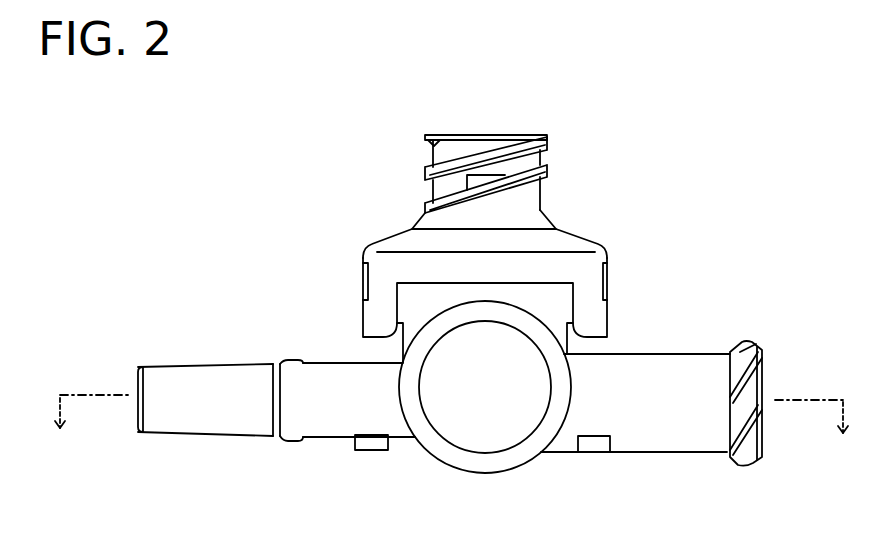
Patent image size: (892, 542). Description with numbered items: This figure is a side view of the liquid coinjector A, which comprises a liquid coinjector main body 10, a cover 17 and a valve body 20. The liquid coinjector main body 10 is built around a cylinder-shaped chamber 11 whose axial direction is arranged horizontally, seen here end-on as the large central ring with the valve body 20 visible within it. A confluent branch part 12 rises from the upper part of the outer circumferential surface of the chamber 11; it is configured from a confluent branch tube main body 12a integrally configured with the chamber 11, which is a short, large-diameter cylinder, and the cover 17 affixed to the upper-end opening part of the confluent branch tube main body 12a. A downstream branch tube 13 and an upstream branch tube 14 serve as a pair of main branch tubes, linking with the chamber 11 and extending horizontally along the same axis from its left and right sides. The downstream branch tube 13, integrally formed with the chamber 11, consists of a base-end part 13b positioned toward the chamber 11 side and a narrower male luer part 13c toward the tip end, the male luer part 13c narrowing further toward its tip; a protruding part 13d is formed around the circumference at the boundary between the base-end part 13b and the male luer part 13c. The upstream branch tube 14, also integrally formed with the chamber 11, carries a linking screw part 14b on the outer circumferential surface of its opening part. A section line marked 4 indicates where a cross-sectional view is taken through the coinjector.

The liquid coinjector A is at (751, 149).
The liquid coinjector main body 10 is at (687, 279).
The chamber 11 is at (452, 457).
The confluent branch part 12 is at (568, 174).
The confluent branch tube main body 12a is at (557, 312).
The downstream branch tube 13 is at (276, 361).
The base-end part 13b is at (359, 378).
The male luer part 13c is at (228, 372).
The protruding part 13d is at (282, 359).
The upstream branch tube 14 is at (652, 397).
The linking screw part 14b is at (744, 343).
The cover 17 is at (563, 237).
The valve body 20 is at (490, 436).
The section line 4 is at (452, 431).